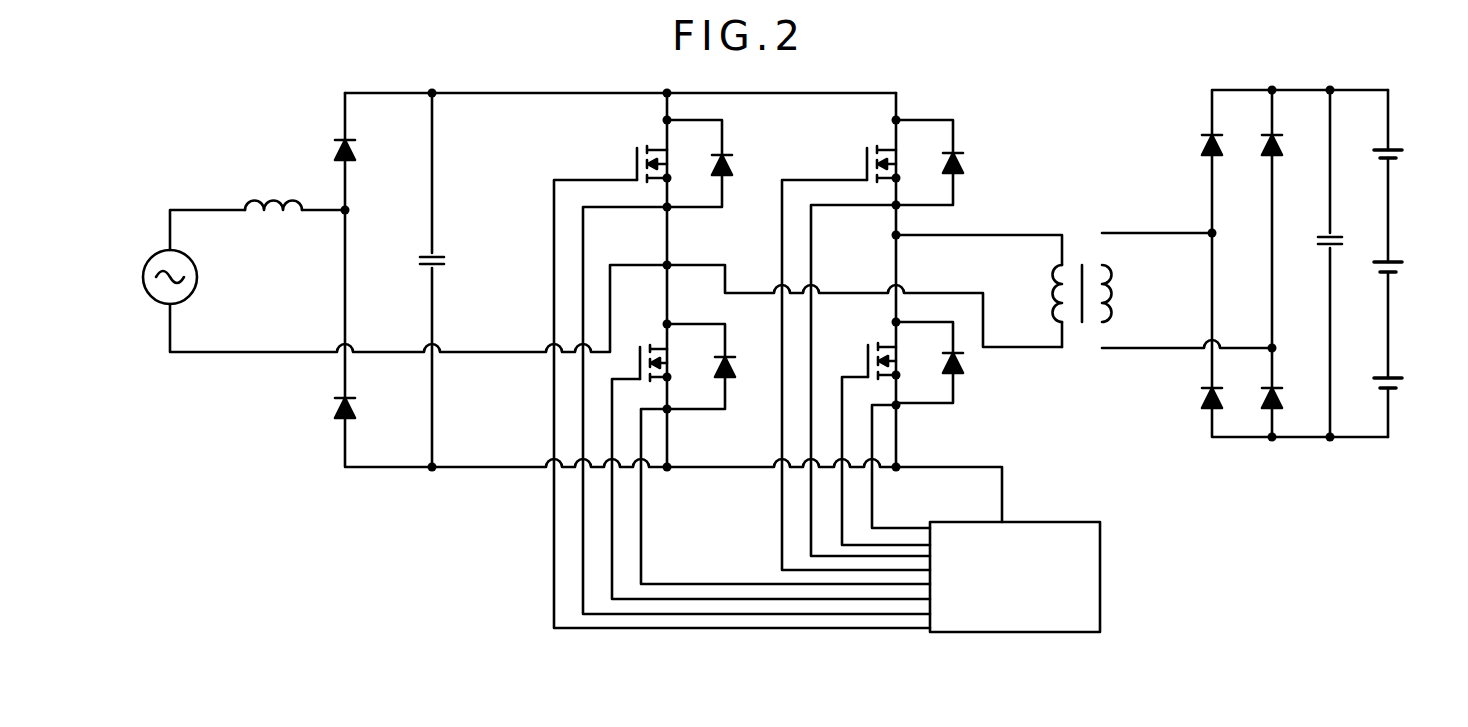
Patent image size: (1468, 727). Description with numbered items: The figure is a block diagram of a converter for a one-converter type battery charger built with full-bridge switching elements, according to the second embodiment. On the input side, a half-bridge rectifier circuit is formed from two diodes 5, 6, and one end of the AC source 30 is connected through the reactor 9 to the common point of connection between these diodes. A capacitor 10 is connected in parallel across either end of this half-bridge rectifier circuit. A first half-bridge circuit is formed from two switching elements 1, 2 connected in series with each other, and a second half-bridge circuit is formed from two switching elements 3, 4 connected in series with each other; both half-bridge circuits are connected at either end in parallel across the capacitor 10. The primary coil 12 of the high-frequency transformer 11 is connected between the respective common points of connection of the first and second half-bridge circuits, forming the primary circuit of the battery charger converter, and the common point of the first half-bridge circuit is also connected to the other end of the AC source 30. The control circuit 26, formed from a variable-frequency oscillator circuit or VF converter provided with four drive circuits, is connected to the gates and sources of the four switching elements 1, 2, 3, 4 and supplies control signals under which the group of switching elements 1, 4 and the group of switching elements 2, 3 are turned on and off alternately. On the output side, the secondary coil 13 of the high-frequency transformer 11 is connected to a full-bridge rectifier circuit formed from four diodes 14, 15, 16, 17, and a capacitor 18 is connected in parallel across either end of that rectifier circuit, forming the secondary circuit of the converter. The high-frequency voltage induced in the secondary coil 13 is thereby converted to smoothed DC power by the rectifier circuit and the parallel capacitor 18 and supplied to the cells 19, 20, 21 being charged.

The switching element 1 is at (588, 159).
The switching element 2 is at (640, 328).
The switching element 3 is at (827, 150).
The switching element 4 is at (862, 330).
The diode 5 is at (355, 138).
The diode 6 is at (362, 418).
The reactor 9 is at (284, 222).
The capacitor 10 is at (416, 268).
The high-frequency transformer 11 is at (1080, 244).
The primary coil 12 is at (1048, 299).
The secondary coil 13 is at (1116, 278).
The diode 14 is at (1222, 156).
The diode 15 is at (1197, 412).
The diode 16 is at (1292, 148).
The diode 17 is at (1252, 412).
The capacitor 18 is at (1322, 250).
The cell 19 is at (1398, 177).
The cell 20 is at (1398, 293).
The cell 21 is at (1398, 400).
The control circuit 26 is at (1102, 620).
The AC source 30 is at (162, 312).